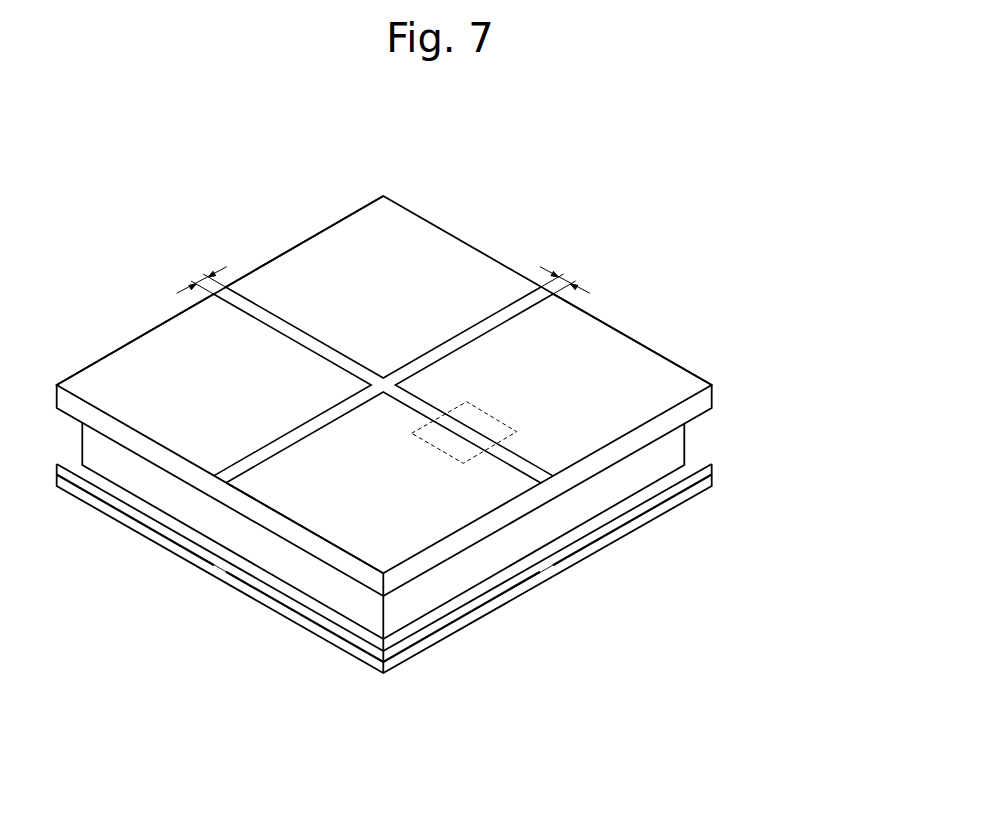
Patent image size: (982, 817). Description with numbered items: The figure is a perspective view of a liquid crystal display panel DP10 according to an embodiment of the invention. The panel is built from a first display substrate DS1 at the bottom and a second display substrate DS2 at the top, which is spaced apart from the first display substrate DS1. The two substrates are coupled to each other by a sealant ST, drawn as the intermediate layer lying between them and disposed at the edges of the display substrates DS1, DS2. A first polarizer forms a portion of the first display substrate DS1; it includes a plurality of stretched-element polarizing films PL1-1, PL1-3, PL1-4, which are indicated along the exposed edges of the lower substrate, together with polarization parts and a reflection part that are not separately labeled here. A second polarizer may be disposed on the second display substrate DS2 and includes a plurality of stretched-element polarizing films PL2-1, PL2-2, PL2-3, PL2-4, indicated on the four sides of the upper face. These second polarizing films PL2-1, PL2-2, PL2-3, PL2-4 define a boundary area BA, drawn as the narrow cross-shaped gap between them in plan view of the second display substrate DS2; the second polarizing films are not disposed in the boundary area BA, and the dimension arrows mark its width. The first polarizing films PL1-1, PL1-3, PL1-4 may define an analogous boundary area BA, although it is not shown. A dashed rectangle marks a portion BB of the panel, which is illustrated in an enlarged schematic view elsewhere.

The liquid crystal display panel DP10 is at (448, 434).
The first display substrate DS1 is at (417, 568).
The second display substrate DS2 is at (702, 400).
The sealant ST is at (674, 444).
The first polarizing film PL1-1 is at (610, 533).
The first polarizing film PL1-3 is at (142, 523).
The first polarizing film PL1-4 is at (462, 618).
The second polarizing film PL2-1 is at (656, 353).
The second polarizing film PL2-2 is at (330, 228).
The second polarizing film PL2-3 is at (133, 341).
The second polarizing film PL2-4 is at (340, 548).
The boundary area BA is at (383, 276).
The portion BB is at (493, 414).